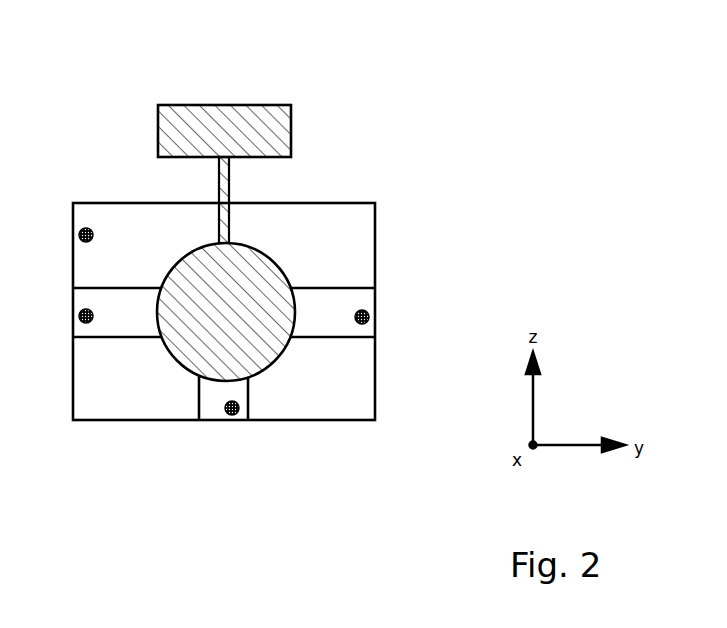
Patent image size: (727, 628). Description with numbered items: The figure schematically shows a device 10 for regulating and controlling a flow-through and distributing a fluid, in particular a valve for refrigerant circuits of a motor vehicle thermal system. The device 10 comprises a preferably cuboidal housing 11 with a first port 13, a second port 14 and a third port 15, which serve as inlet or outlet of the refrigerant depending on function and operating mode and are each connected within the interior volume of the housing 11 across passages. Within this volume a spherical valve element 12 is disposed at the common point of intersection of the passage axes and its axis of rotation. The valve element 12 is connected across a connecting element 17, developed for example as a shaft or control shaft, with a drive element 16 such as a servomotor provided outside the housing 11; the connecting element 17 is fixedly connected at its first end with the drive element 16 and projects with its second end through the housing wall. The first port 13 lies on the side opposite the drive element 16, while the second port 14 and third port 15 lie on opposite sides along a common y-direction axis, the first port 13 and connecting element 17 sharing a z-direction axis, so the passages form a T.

The device 10 is at (382, 106).
The housing 11 is at (82, 229).
The valve element 12 is at (162, 347).
The first port 13 is at (228, 414).
The second port 14 is at (82, 310).
The third port 15 is at (366, 311).
The drive element 16 is at (183, 105).
The connecting element 17 is at (218, 178).